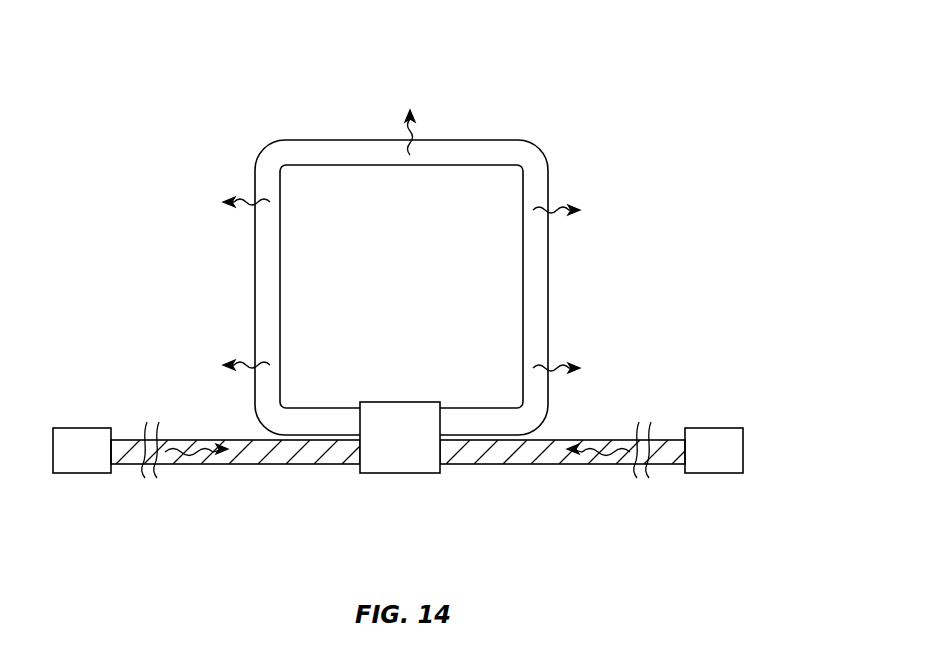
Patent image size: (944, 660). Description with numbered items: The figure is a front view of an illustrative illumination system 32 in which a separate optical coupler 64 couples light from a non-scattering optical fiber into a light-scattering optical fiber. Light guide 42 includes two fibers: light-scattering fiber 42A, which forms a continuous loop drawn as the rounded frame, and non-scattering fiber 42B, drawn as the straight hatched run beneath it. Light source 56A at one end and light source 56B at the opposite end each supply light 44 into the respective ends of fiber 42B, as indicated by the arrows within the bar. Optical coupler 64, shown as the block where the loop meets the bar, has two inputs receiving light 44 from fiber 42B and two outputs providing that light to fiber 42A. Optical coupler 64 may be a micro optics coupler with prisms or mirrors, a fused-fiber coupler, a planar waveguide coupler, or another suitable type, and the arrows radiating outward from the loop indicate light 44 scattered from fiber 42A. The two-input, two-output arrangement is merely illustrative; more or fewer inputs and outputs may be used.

The electronic device 32 is at (570, 73).
The light guide 42 is at (392, 333).
The light-scattering fiber 42A is at (540, 174).
The non-scattering fiber 42B is at (483, 466).
The light 44 is at (409, 128).
The light source 56A is at (80, 464).
The light source 56B is at (713, 464).
The optical coupler 64 is at (403, 475).